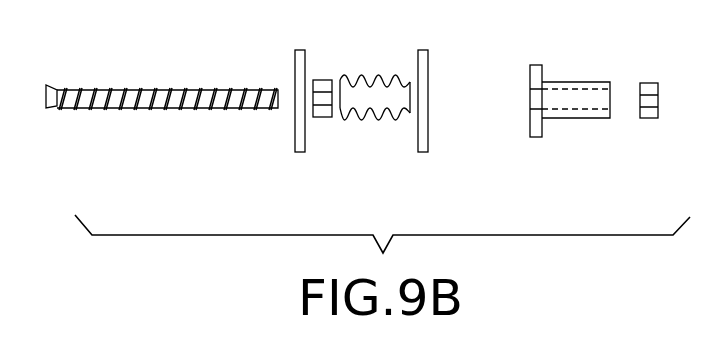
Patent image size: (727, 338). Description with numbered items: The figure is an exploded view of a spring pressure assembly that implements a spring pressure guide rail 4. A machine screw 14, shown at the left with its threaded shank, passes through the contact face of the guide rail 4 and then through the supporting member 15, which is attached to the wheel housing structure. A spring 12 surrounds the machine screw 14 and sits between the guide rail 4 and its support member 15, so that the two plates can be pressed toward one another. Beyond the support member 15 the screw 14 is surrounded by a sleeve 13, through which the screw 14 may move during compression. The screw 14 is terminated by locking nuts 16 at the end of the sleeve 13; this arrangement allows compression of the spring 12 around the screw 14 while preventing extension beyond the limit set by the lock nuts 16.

The spring pressure guide rail 4 is at (294, 128).
The spring 12 is at (377, 121).
The sleeve 13 is at (565, 80).
The machine screw 14 is at (175, 89).
The supporting member 15 is at (430, 105).
The locking nuts 16 is at (320, 122).